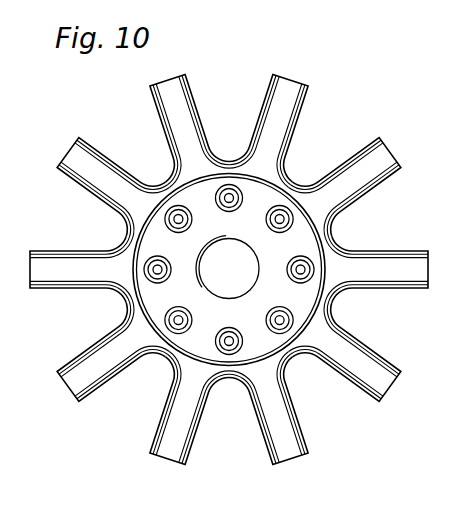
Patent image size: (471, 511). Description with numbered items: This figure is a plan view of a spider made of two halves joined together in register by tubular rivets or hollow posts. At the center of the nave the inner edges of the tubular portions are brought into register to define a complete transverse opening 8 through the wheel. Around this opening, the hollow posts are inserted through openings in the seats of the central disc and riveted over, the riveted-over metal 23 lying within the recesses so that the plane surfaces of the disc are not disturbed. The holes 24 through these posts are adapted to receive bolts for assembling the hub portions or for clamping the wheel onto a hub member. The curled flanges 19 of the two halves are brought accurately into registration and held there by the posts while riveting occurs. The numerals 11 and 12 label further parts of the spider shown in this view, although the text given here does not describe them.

The transverse opening 8 is at (227, 267).
The hub plate 11 is at (173, 350).
The arms 12 is at (378, 152).
The curled flanges 19 is at (346, 152).
The riveted-over metal 23 is at (281, 323).
The holes 24 is at (303, 271).